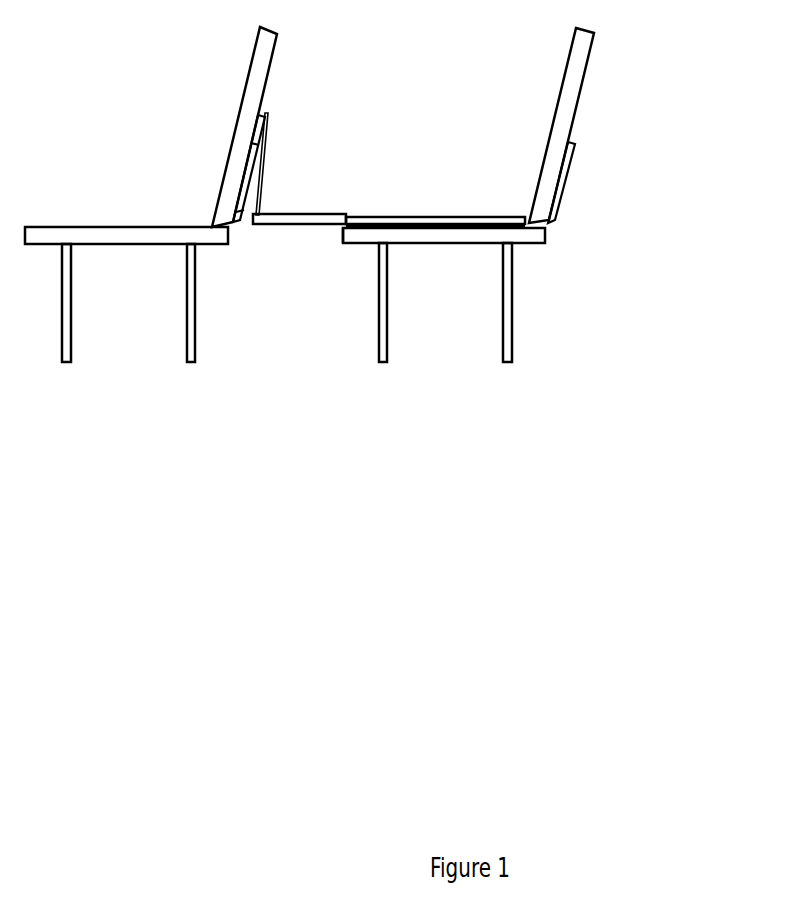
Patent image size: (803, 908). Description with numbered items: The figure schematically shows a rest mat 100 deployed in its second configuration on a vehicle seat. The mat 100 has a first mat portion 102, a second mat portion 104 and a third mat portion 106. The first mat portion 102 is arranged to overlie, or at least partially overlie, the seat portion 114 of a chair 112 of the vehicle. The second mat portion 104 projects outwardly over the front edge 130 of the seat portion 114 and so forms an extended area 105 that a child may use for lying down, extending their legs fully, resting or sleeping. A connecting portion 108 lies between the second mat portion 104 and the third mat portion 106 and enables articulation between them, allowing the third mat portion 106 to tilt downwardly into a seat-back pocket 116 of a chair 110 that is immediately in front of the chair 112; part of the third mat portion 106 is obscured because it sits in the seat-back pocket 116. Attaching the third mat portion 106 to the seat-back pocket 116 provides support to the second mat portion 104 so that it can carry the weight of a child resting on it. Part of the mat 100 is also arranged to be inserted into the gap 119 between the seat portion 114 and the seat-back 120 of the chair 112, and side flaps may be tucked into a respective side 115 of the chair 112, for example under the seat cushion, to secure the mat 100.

The mat 100 is at (370, 102).
The first mat portion 102 is at (435, 215).
The second mat portion 104 is at (305, 217).
The extended area 105 is at (392, 187).
The third mat portion 106 is at (265, 120).
The connecting portion 108 is at (260, 188).
The chair 110 is at (141, 105).
The chair 112 is at (464, 130).
The seat portion 114 is at (485, 237).
The side of the chair 115 is at (435, 243).
The seat-back pocket 116 is at (238, 203).
The gap 119 is at (545, 225).
The seat-back 120 is at (573, 107).
The front edge 130 is at (342, 240).